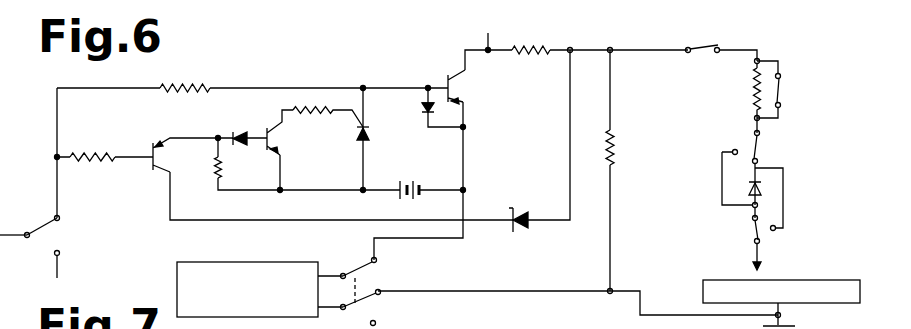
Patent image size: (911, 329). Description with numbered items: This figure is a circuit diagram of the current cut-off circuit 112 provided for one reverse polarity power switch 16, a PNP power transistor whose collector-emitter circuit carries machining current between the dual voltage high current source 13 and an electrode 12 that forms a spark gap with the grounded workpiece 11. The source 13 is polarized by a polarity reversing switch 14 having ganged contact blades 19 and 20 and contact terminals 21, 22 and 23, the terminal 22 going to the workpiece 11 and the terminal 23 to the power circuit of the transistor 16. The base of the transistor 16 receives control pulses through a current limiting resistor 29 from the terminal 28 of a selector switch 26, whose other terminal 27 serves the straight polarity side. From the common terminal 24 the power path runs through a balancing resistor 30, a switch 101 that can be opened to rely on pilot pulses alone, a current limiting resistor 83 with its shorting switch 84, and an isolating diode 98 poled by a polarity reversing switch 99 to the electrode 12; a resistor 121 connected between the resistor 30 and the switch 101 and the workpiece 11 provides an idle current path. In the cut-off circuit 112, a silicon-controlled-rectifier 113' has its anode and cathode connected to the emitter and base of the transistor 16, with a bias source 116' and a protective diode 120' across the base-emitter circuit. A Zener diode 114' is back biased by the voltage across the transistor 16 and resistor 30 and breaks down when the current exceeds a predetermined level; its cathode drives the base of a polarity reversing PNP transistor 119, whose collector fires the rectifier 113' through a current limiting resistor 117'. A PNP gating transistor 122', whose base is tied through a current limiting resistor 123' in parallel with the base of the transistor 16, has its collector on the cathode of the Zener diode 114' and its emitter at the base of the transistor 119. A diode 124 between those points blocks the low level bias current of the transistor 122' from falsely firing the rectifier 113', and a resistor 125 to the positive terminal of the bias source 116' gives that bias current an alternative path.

The current limiting resistor 29 is at (176, 82).
The current limiting resistor 123' is at (109, 138).
The gating transistor 122' is at (189, 173).
The diode 124 is at (253, 112).
The resistor 125 is at (225, 165).
The polarity reversing transistor 119 is at (283, 140).
The current limiting resistor 117' is at (328, 130).
The silicon-controlled-rectifier 113' is at (396, 139).
The diode 120' is at (407, 77).
The bias source 116' is at (419, 173).
The reverse polarity power switch 16 is at (464, 88).
The terminal 24 is at (489, 54).
The balancing resistor 30 is at (528, 45).
The resistor 121 is at (616, 141).
The Zener diode 114' is at (542, 236).
The current cut-off circuit 112 is at (164, 206).
The terminal 28 is at (54, 217).
The selector switch 26 is at (61, 233).
The terminal 27 is at (54, 254).
The high current source 13 is at (231, 262).
The contact blade 20 is at (357, 270).
The contact terminal 23 is at (378, 260).
The contact terminal 22 is at (376, 292).
The polarity reversing switch 14 is at (346, 288).
The contact blade 19 is at (363, 302).
The contact terminal 21 is at (376, 323).
The switch 101 is at (707, 47).
The current limiting resistor 83 is at (752, 90).
The shorting switch 84 is at (784, 92).
The polarity reversing switch 99 is at (721, 186).
The diode 98 is at (763, 189).
The electrode 12 is at (760, 268).
The workpiece 11 is at (822, 305).